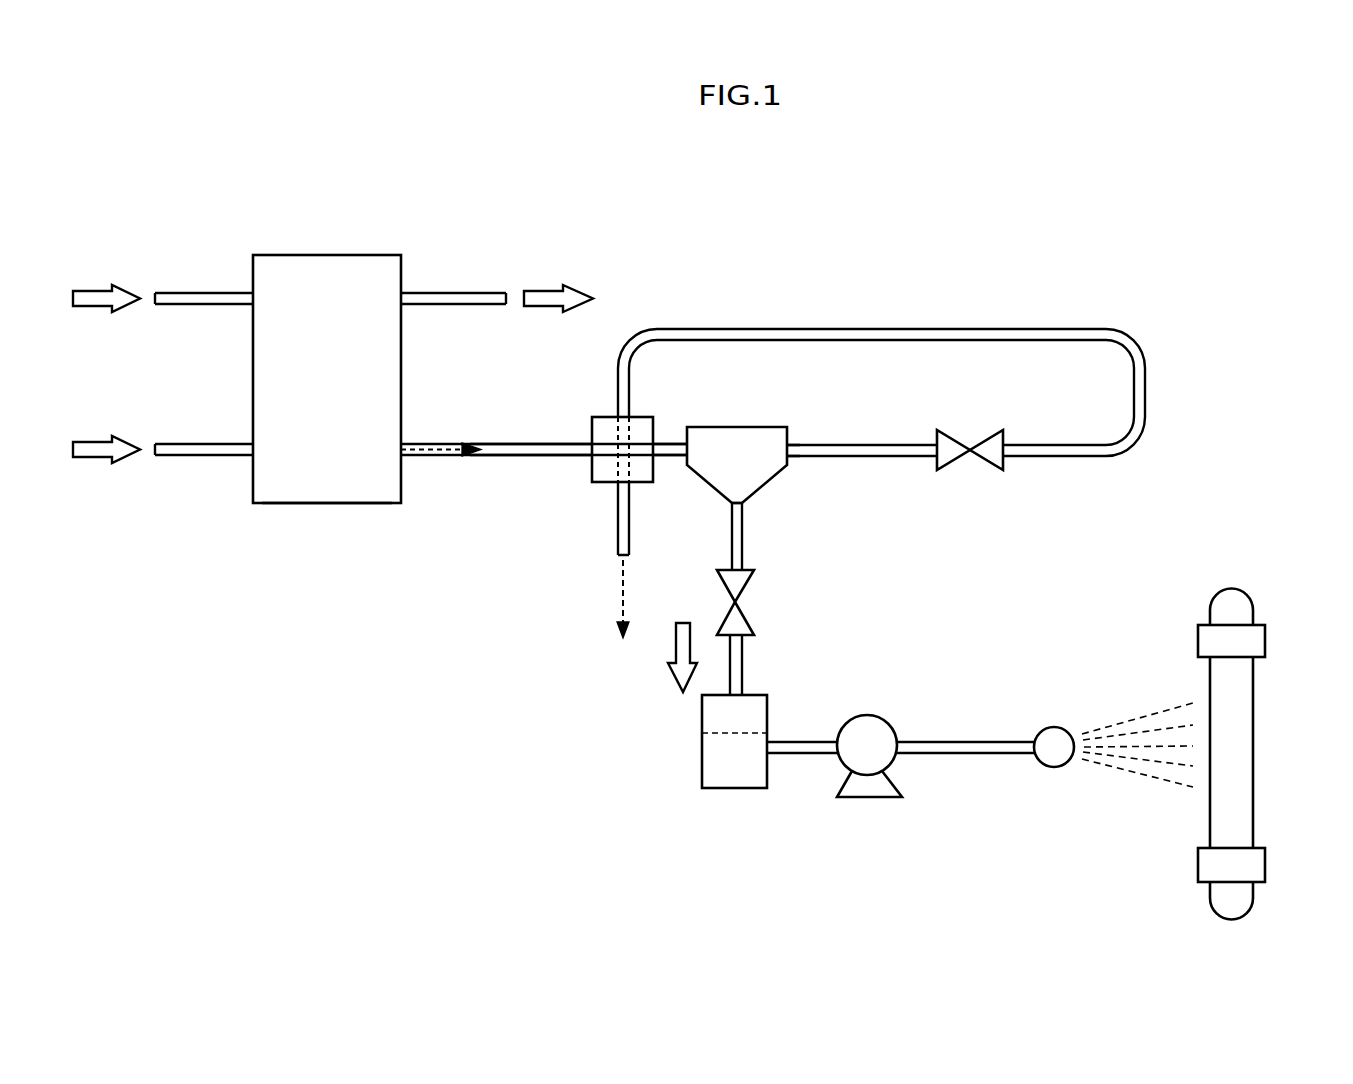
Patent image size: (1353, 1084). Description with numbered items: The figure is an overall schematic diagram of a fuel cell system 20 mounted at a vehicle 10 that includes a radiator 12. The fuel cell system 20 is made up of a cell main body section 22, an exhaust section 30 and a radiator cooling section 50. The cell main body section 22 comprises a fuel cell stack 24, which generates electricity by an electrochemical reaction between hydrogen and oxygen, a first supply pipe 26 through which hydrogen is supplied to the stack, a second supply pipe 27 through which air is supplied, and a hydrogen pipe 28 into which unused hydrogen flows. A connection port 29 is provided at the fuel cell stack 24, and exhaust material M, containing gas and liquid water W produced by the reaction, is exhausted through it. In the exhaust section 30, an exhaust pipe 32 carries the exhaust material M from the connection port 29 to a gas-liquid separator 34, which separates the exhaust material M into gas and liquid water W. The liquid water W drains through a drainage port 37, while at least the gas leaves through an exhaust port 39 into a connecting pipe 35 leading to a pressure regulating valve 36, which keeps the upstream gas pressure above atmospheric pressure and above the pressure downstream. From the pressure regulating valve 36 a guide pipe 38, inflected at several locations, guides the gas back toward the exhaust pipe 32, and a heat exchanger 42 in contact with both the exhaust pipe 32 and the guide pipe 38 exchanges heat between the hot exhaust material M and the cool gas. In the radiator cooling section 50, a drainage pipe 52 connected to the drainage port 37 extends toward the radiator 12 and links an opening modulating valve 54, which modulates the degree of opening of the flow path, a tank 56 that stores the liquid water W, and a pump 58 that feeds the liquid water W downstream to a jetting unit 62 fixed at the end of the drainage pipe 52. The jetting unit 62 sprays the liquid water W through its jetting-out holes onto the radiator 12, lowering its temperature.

The vehicle 10 is at (1247, 192).
The radiator 12 is at (1253, 715).
The fuel cell system 20 is at (1141, 283).
The cell main body section 22 is at (343, 228).
The fuel cell stack 24 is at (326, 505).
The first supply pipe 26 is at (194, 290).
The second supply pipe 27 is at (205, 458).
The hydrogen pipe 28 is at (455, 290).
The connection port 29 is at (402, 458).
The exhaust material M is at (438, 443).
The exhaust section 30 is at (986, 318).
The exhaust pipe 32 is at (540, 457).
The gas-liquid separator 34 is at (770, 487).
The connecting pipe 35 is at (868, 458).
The pressure regulating valve 36 is at (984, 462).
The drainage port 37 is at (730, 510).
The guide pipe 38 is at (850, 327).
The exhaust port 39 is at (793, 443).
The heat exchanger 42 is at (650, 415).
The radiator cooling section 50 is at (857, 660).
The drainage pipe 52 is at (730, 545).
The opening modulating valve 54 is at (744, 591).
The tank 56 is at (735, 790).
The pump 58 is at (882, 713).
The jetting unit 62 is at (1052, 727).
The liquid water W is at (730, 733).